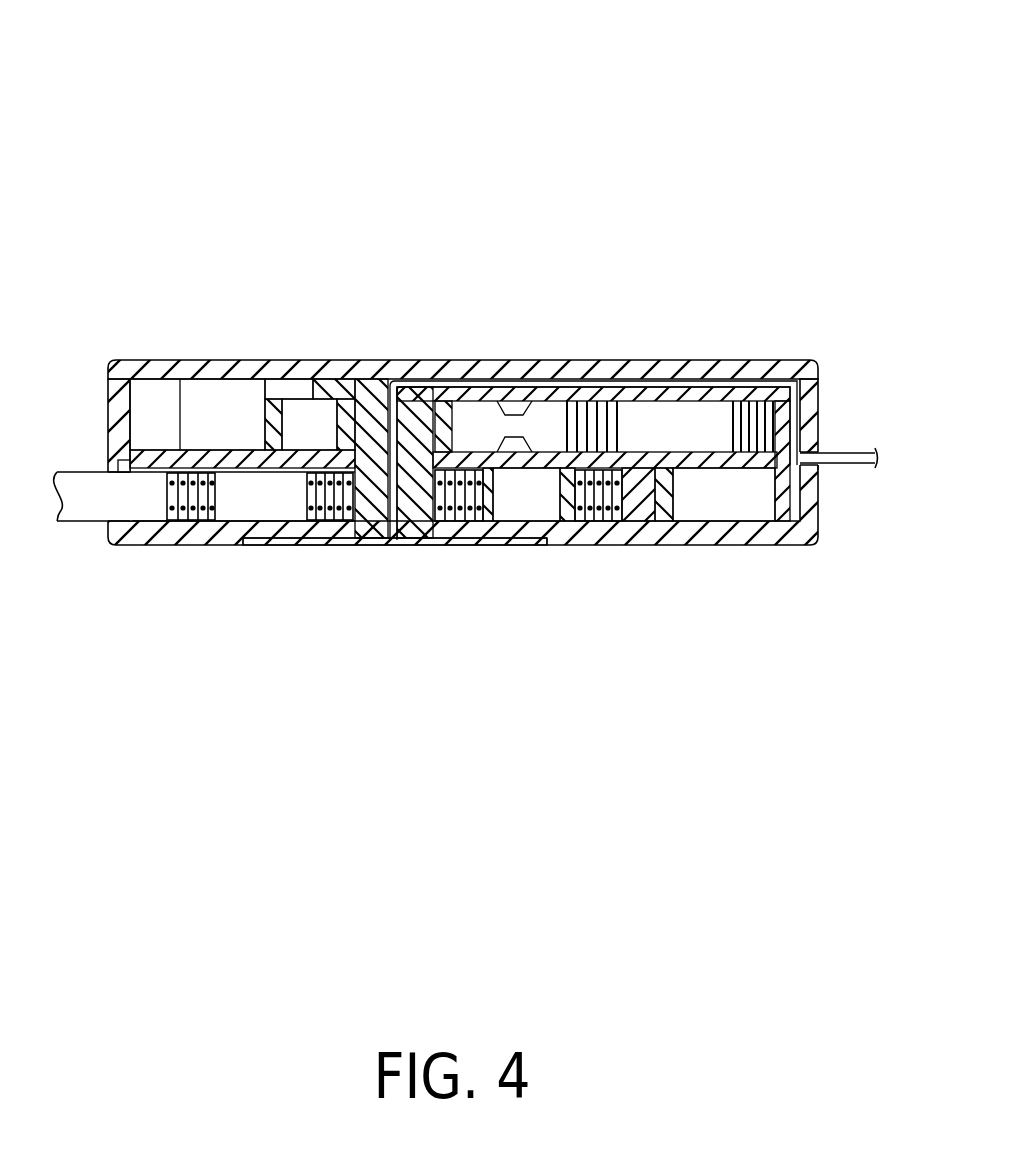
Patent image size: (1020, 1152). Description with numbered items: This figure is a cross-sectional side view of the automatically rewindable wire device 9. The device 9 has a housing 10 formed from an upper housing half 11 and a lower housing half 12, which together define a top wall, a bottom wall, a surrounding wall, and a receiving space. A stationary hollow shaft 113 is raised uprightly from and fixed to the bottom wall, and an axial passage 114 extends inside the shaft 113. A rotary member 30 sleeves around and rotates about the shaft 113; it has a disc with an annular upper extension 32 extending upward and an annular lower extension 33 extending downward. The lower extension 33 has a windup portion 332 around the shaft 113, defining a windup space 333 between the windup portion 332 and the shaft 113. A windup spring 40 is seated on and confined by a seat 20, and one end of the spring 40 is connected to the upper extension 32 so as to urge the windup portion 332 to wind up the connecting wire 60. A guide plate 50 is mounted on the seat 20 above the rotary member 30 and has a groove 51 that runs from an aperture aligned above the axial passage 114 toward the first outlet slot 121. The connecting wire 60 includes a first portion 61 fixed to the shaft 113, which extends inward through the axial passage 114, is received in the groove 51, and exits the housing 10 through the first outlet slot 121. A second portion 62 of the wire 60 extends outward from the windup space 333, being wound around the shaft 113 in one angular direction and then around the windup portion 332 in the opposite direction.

The automatically rewindable wire device 9 is at (598, 150).
The housing 10 is at (815, 553).
The upper housing half 11 is at (607, 547).
The lower housing half 12 is at (587, 362).
The stationary hollow shaft 113 is at (352, 500).
The axial passage 114 is at (396, 540).
The first outlet slot 121 is at (820, 481).
The seat 20 is at (718, 480).
The rotary member 30 is at (605, 557).
The annular upper extension 32 is at (270, 405).
The annular lower extension 33 is at (567, 512).
The windup portion 332 is at (557, 490).
The windup space 333 is at (237, 502).
The windup spring 40 is at (748, 386).
The guide plate 50 is at (655, 410).
The groove 51 is at (678, 386).
The connecting wire 60 is at (197, 506).
The first portion 61 is at (848, 450).
The second portion 62 is at (75, 470).